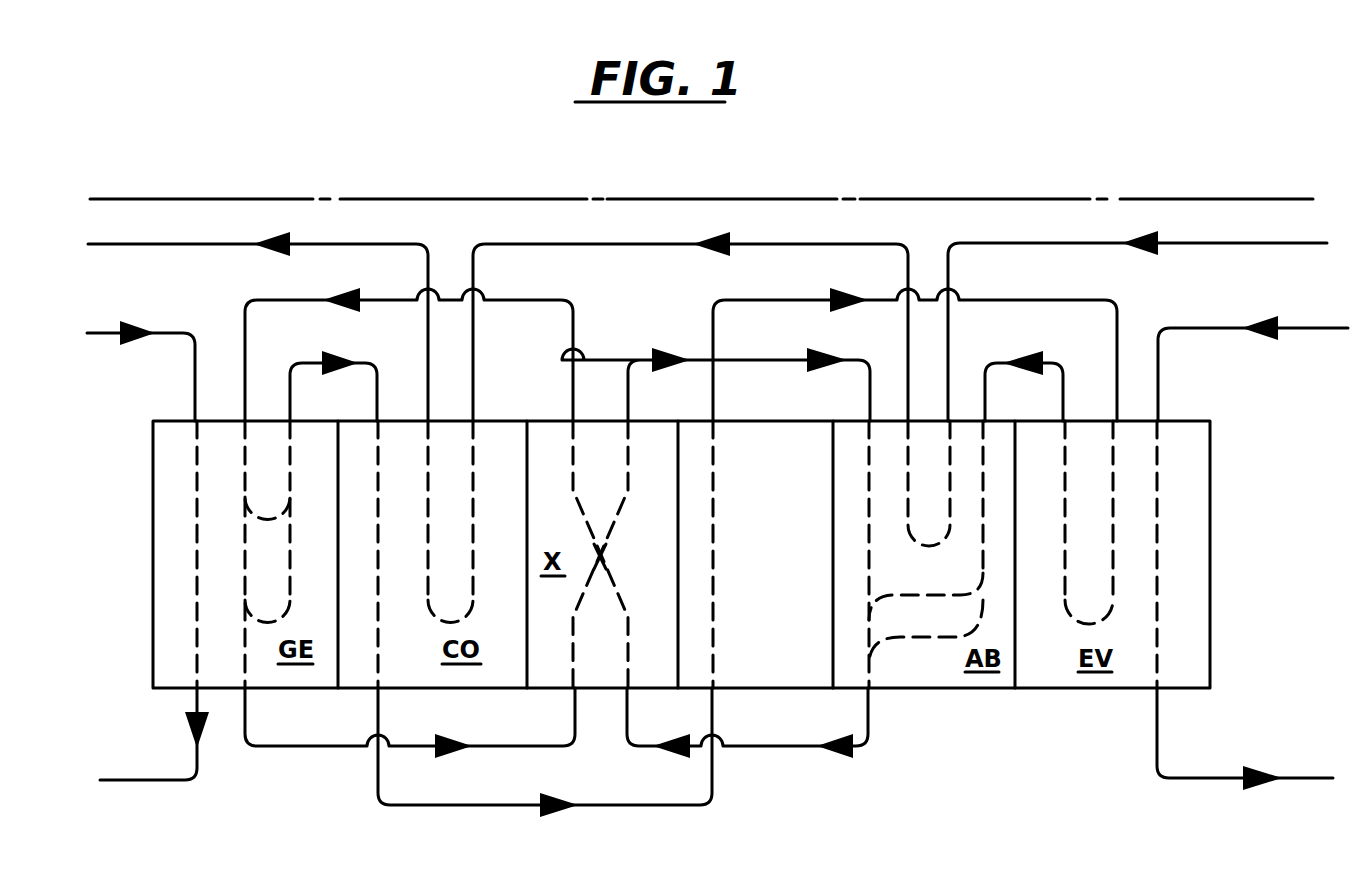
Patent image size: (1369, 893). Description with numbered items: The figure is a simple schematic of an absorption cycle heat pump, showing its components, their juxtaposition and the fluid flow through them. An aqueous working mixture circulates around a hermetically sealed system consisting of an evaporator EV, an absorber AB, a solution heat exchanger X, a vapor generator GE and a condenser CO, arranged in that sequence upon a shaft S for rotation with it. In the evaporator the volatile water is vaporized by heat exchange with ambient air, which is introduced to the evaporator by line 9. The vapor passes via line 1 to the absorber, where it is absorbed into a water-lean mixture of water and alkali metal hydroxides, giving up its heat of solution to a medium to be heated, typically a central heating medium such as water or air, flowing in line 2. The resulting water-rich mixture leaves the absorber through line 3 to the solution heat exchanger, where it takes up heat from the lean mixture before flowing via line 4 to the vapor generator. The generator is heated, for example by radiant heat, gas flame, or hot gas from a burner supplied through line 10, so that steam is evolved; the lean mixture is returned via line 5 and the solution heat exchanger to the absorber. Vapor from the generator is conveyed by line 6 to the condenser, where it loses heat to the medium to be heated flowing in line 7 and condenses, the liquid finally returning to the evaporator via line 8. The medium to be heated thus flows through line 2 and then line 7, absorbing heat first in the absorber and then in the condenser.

The line 1 is at (999, 362).
The line 2 is at (1237, 241).
The line 3 is at (872, 727).
The line 4 is at (564, 300).
The line 5 is at (478, 744).
The line 6 is at (350, 357).
The line 7 is at (478, 258).
The line 8 is at (457, 805).
The line 9 is at (1303, 327).
The line 10 is at (143, 337).
The shaft S is at (933, 198).